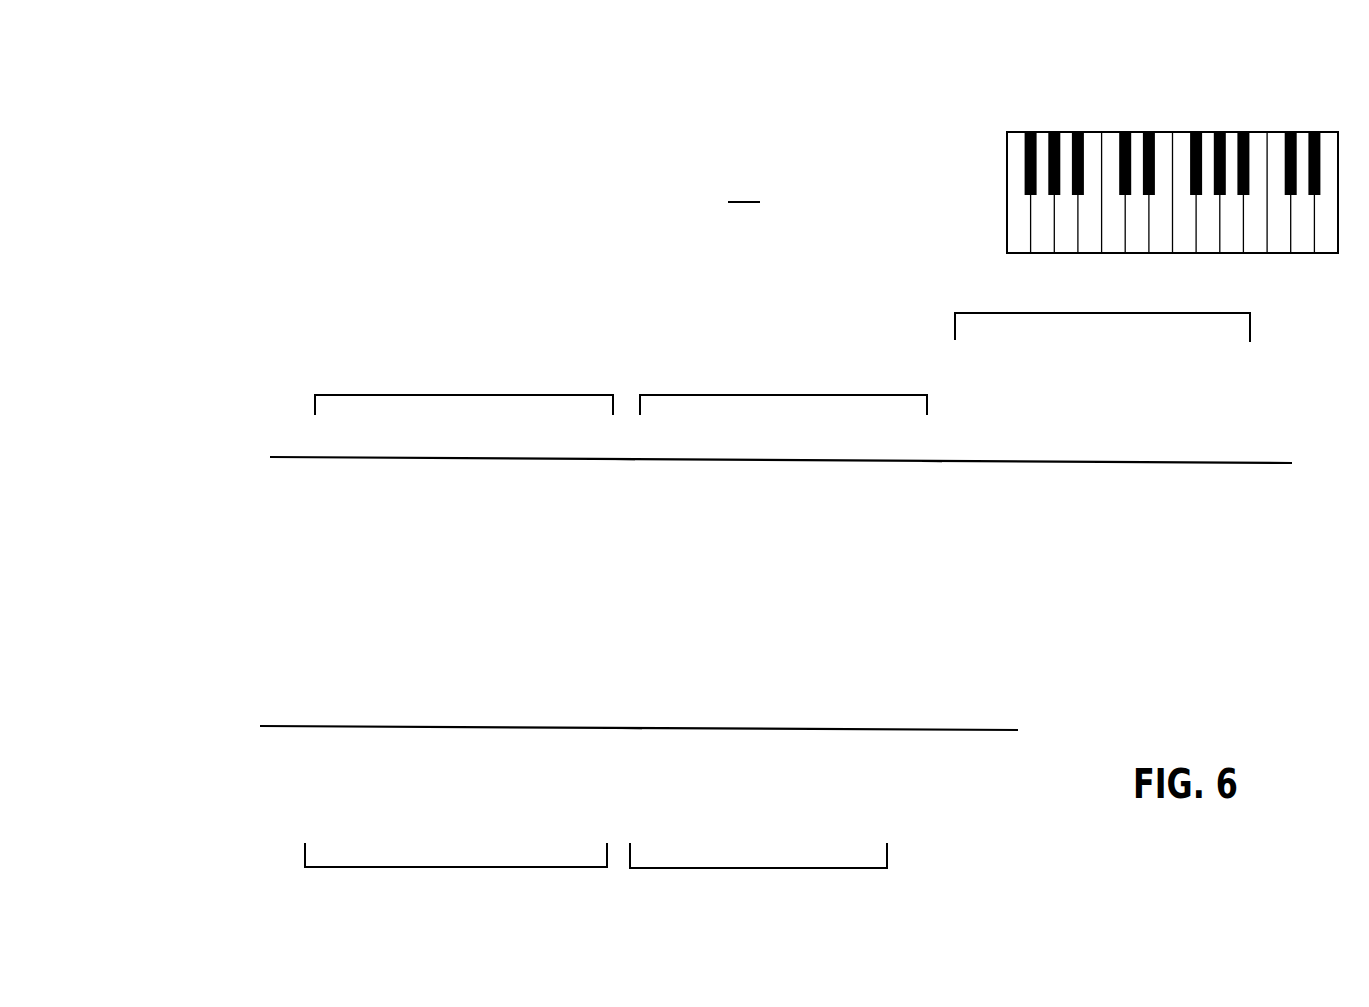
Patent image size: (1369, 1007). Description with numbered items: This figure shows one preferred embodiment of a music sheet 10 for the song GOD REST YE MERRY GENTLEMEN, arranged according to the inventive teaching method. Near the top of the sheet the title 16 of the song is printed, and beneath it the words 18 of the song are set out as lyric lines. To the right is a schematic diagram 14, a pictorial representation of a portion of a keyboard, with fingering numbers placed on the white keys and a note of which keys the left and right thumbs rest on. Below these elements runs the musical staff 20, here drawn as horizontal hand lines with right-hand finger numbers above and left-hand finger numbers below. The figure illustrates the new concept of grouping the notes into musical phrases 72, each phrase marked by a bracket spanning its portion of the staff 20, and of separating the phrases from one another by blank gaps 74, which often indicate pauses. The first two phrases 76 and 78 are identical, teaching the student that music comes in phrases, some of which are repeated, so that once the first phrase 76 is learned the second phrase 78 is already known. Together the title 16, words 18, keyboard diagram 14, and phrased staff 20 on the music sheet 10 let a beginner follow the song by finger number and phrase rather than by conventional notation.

The music sheet 10 is at (744, 191).
The schematic diagram 14 is at (994, 190).
The title 16 is at (504, 77).
The words 18 is at (508, 185).
The musical staff 20 is at (1308, 461).
The musical phrases 72 is at (392, 393).
The blank gaps 74 is at (623, 478).
The first phrase 76 is at (538, 393).
The second phrase 78 is at (840, 393).